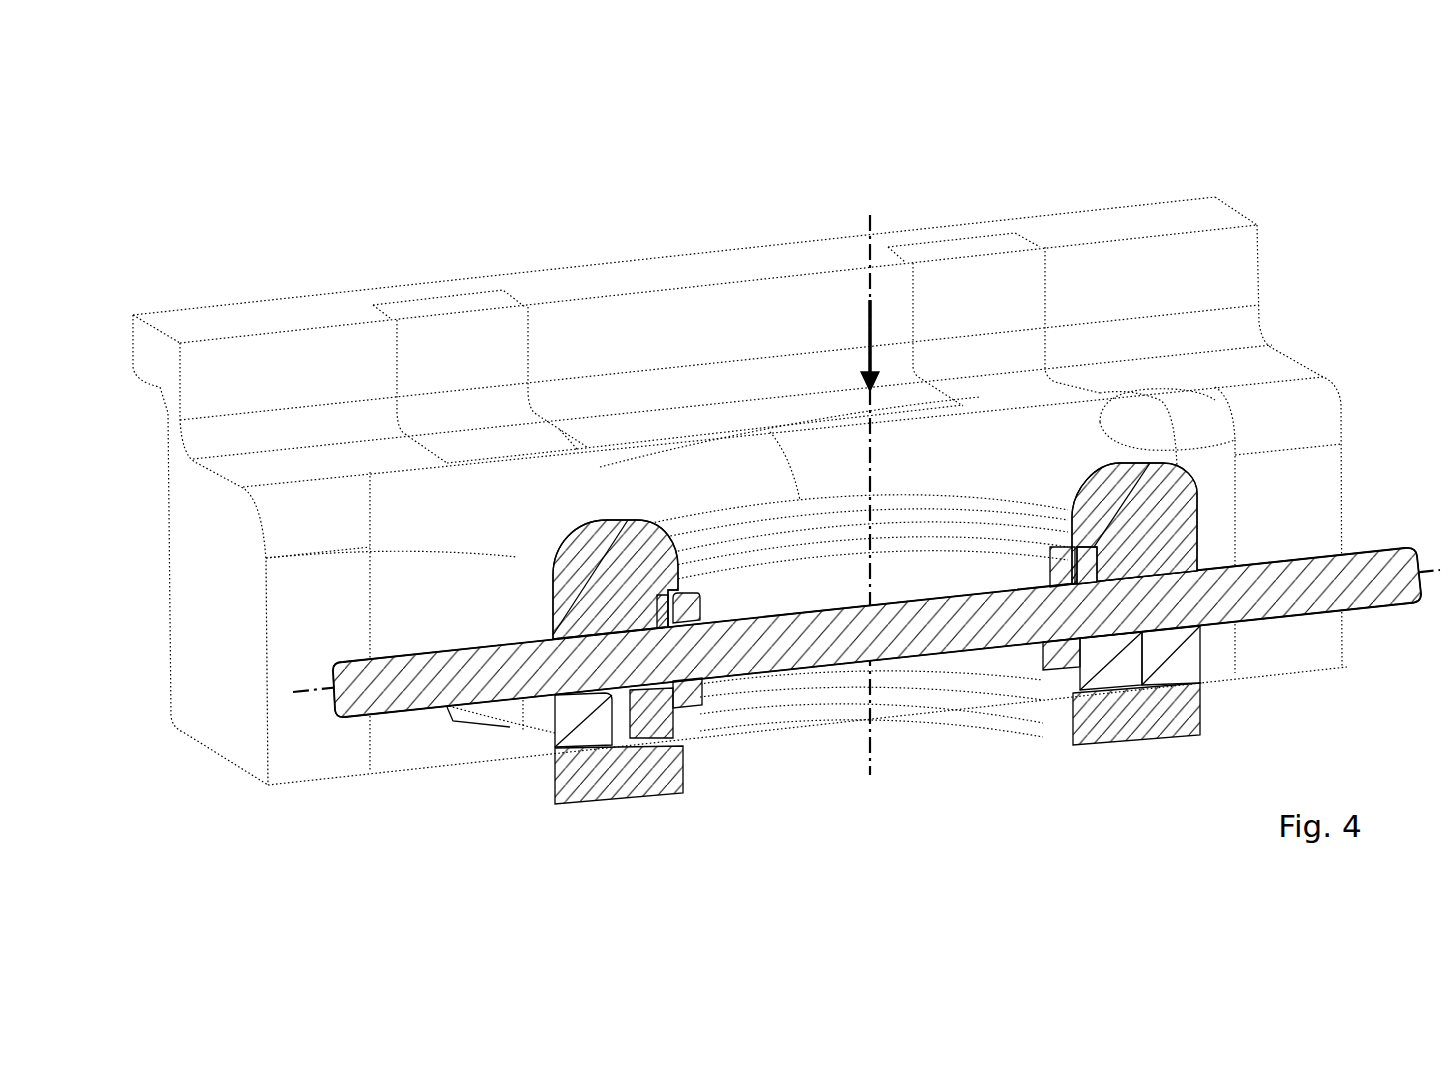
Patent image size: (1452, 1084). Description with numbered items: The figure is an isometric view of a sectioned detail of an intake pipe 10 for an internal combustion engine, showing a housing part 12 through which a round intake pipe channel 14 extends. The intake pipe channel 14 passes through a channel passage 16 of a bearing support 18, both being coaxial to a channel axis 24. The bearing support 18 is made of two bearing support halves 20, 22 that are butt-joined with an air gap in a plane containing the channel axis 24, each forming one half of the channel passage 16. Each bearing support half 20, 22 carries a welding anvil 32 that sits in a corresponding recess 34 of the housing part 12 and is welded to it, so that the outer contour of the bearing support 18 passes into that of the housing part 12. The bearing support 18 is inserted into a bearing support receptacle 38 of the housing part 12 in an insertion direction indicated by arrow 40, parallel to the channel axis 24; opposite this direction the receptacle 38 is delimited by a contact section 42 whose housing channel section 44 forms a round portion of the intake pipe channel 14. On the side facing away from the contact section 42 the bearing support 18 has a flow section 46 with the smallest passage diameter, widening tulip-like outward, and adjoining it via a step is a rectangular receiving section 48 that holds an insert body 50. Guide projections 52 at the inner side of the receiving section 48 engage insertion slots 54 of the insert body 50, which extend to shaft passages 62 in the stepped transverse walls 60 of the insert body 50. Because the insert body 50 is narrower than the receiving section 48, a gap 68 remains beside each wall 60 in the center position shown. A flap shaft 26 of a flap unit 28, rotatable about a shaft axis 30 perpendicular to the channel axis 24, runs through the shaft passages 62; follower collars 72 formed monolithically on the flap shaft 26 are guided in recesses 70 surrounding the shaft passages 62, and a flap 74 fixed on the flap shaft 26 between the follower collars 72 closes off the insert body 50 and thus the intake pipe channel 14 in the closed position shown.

The intake pipe 10 is at (270, 198).
The housing part 12 is at (207, 323).
The intake pipe channel 14 is at (829, 578).
The channel passage 16 is at (957, 490).
The bearing support 18 is at (470, 523).
The bearing support half 20 is at (460, 497).
The bearing support half 22 is at (1135, 430).
The channel axis 24 is at (867, 260).
The flap shaft 26 is at (1347, 567).
The flap unit 28 is at (847, 665).
The shaft axis 30 is at (307, 690).
The welding anvil 32 is at (455, 307).
The recess 34 is at (390, 316).
The bearing support receptacle 38 is at (500, 727).
The arrow 40 is at (867, 340).
The contact section 42 is at (587, 770).
The housing channel section 44 is at (887, 707).
The flow section 46 is at (757, 467).
The receiving section 48 is at (1177, 647).
The insert body 50 is at (657, 720).
The guide projection 52 is at (643, 607).
The insertion slot 54 is at (663, 592).
The transverse side or wall 60 is at (627, 720).
The shaft passage 62 is at (587, 622).
The gap 68 is at (620, 712).
The recess 70 is at (678, 712).
The follower collar 72 is at (687, 605).
The flap 74 is at (887, 587).